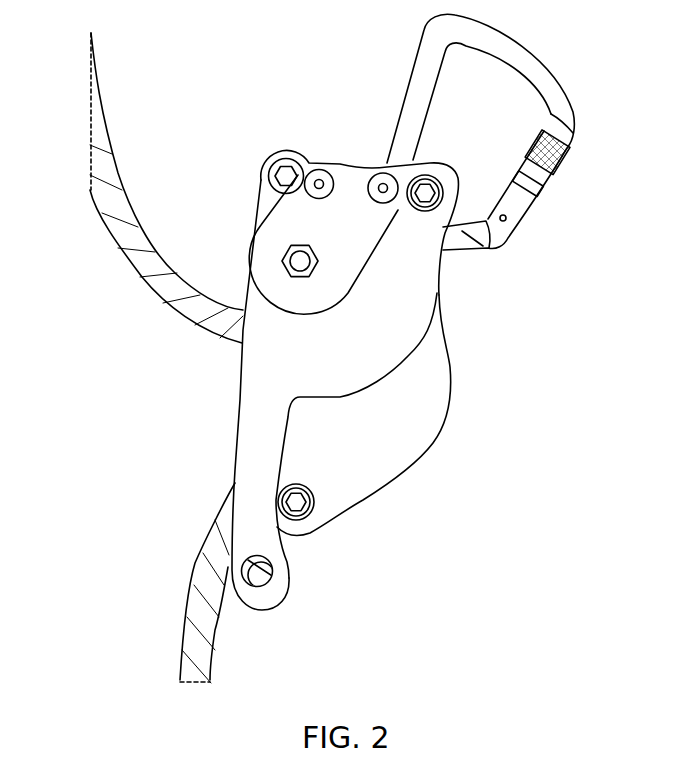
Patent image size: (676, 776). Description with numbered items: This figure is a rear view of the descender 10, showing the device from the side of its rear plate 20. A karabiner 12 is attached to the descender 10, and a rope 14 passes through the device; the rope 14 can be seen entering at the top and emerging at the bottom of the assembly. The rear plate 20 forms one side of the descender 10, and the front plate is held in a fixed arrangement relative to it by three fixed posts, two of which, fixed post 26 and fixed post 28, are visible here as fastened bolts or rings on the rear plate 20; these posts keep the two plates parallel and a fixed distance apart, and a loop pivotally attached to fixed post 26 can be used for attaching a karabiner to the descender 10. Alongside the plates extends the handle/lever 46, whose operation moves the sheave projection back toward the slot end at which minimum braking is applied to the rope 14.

The descender 10 is at (505, 334).
The karabiner 12 is at (560, 100).
The rope 14 is at (97, 157).
The rear plate 20 is at (395, 460).
The fixed post 26 is at (305, 503).
The fixed post 28 is at (428, 190).
The handle/lever 46 is at (253, 400).